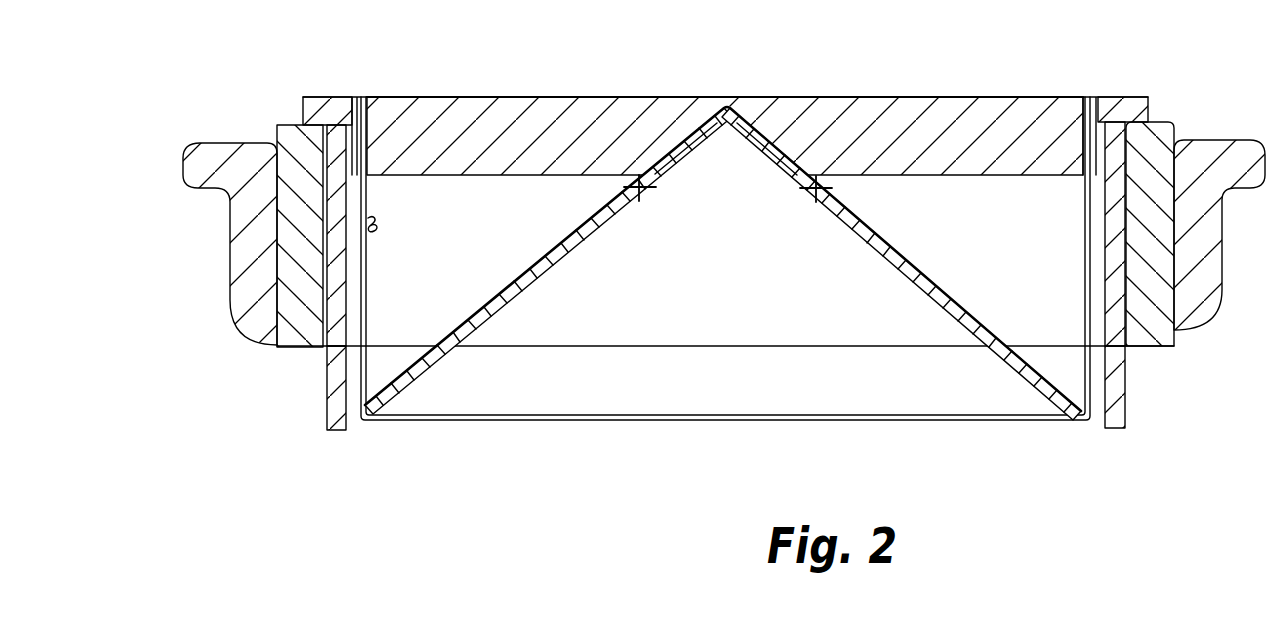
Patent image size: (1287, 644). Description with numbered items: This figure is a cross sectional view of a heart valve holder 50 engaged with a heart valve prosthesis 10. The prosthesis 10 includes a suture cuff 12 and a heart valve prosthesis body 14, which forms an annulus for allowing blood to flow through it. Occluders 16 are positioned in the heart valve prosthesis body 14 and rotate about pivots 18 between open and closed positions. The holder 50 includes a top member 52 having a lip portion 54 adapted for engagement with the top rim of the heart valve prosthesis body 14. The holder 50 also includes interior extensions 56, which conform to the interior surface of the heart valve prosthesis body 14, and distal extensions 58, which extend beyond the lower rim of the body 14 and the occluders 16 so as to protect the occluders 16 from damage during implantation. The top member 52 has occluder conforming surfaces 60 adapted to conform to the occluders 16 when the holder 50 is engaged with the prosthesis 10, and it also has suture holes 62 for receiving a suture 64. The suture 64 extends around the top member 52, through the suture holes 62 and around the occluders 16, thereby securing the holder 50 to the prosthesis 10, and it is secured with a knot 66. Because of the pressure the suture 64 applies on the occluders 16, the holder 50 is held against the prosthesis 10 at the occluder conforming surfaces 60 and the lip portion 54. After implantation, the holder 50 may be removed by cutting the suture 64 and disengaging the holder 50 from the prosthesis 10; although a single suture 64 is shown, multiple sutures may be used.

The heart valve prosthesis 10 is at (280, 116).
The suture cuff 12 is at (208, 152).
The heart valve prosthesis body 14 is at (278, 345).
The occluder 16 is at (547, 280).
The pivot 18 is at (650, 190).
The heart valve holder 50 is at (314, 88).
The top member 52 is at (498, 120).
The lip portion 54 is at (305, 112).
The interior extension 56 is at (337, 289).
The distal extension 58 is at (336, 387).
The occluder conforming surface 60 is at (677, 147).
The suture hole 62 is at (366, 135).
The suture 64 is at (562, 97).
The knot 66 is at (390, 228).